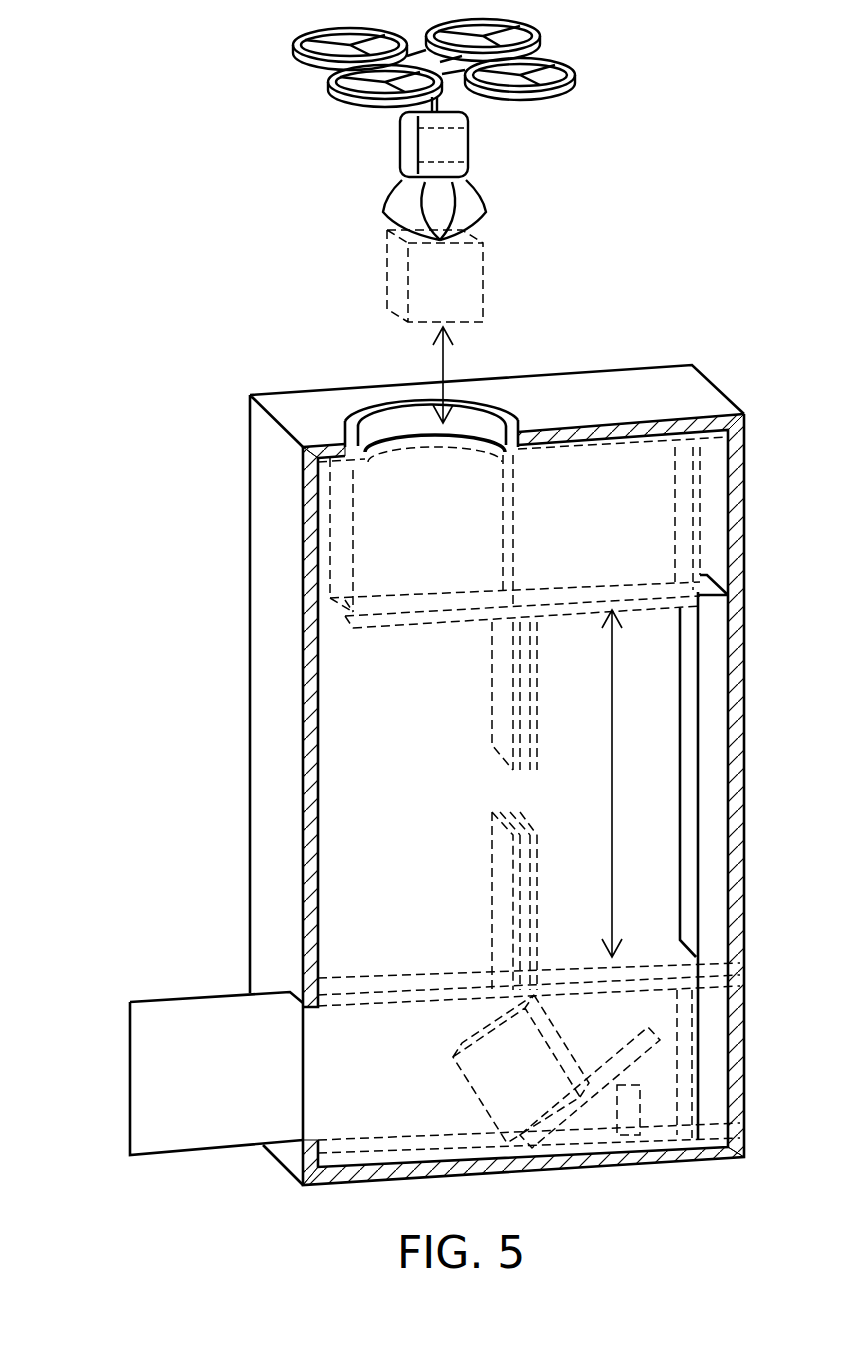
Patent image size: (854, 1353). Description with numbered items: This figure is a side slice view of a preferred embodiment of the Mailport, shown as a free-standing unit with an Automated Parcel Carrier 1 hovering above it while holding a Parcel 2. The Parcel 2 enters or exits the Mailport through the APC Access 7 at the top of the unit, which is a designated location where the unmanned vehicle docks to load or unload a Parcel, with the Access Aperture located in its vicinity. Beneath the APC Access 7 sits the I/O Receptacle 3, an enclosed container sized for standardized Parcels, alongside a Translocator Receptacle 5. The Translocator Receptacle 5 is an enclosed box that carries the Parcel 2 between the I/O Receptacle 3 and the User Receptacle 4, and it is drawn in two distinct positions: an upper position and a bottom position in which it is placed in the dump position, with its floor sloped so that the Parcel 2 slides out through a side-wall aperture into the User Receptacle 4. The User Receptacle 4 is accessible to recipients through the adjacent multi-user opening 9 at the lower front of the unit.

The Automated Parcel Carrier 1 is at (297, 60).
The Parcel 2 is at (488, 686).
The Inbound/Outbound receptacle 3 is at (515, 543).
The User Receptacle 4 is at (529, 1058).
The Translocator Receptacle 5 is at (601, 797).
The APC Access 7 is at (405, 418).
The multi-user opening 9 is at (320, 1075).